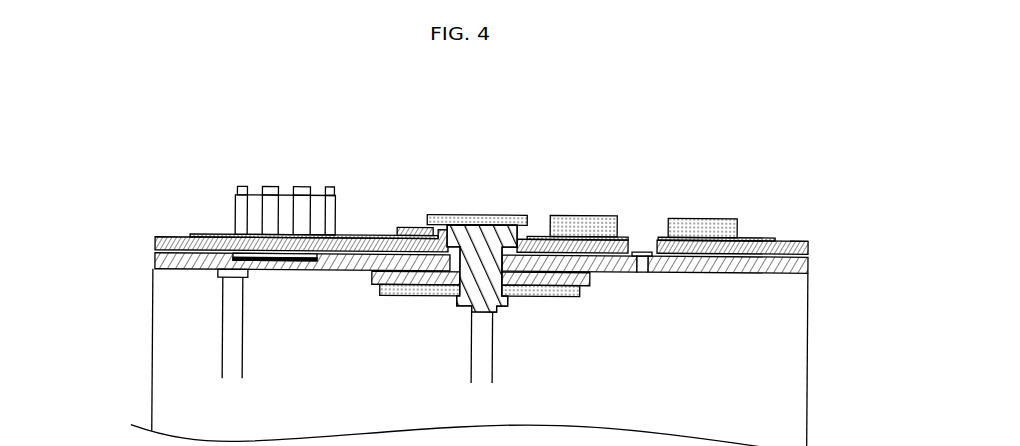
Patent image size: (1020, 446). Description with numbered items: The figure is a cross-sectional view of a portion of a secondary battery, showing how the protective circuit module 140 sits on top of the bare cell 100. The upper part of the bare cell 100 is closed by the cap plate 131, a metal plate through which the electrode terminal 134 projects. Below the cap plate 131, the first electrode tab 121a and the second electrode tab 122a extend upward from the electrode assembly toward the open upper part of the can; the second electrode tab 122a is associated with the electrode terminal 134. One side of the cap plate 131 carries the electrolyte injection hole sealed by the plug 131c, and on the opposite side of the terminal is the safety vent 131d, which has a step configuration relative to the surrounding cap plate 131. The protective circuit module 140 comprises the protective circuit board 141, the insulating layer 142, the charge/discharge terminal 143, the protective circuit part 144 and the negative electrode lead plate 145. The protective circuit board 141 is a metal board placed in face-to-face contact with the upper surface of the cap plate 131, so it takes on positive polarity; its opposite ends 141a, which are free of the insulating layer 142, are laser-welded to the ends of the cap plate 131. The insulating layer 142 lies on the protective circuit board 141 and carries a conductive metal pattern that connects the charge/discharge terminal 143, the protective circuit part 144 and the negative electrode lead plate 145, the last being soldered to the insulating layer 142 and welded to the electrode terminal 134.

The bare cell 100 is at (142, 352).
The first electrode tab 121a is at (223, 355).
The second electrode tab 122a is at (475, 353).
The cap plate 131 is at (153, 258).
The plug 131c is at (643, 272).
The safety vent 131d is at (291, 270).
The electrode terminal 134 is at (491, 215).
The protective circuit module 140 is at (464, 204).
The protective circuit board 141 is at (153, 247).
The ends of protective circuit board 141a is at (797, 234).
The insulating layer 142 is at (210, 233).
The charge/discharge terminal 143 is at (285, 205).
The protective circuit part 144 is at (700, 217).
The negative electrode lead plate 145 is at (440, 215).